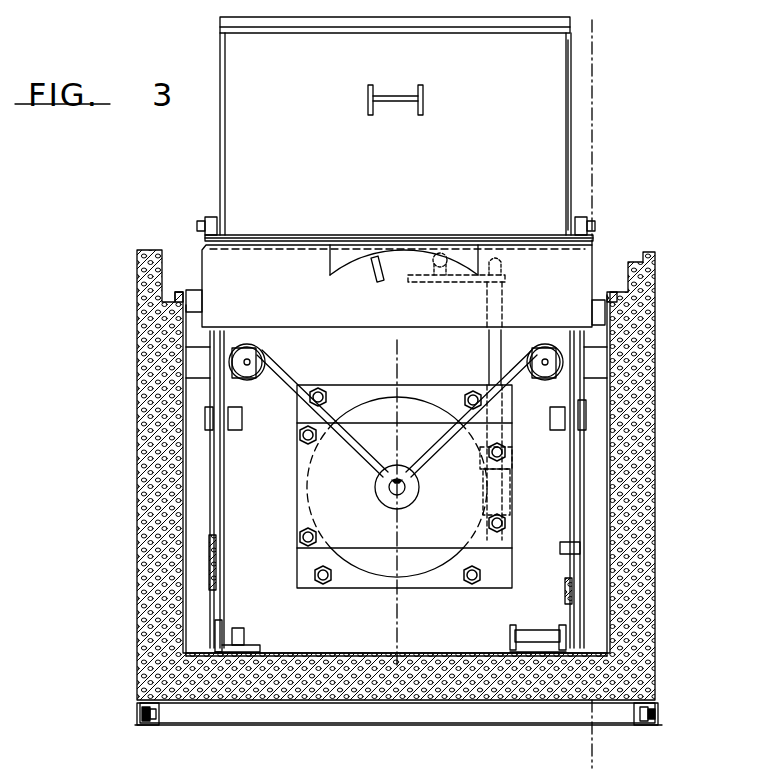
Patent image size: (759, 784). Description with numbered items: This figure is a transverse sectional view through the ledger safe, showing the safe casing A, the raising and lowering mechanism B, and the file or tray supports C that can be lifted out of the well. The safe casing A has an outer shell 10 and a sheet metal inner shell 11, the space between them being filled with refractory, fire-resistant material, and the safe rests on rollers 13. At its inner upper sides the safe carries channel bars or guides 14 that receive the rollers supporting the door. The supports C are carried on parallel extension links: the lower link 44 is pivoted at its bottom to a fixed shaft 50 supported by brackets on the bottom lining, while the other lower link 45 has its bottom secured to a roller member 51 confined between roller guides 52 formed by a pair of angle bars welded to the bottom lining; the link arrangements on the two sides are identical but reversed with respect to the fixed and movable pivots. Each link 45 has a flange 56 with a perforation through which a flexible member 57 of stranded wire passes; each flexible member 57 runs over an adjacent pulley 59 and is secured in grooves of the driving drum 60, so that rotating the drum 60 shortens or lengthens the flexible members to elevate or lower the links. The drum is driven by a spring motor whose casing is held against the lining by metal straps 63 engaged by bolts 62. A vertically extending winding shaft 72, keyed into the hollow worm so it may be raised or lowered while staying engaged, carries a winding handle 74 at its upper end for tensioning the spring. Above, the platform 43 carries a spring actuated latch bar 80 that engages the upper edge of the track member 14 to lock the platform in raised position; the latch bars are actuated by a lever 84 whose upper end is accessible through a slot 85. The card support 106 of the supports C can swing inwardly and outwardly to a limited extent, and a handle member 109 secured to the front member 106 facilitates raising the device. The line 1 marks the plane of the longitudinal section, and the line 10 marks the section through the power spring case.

The section line 1— 1 is at (583, 33).
The shell 10 is at (410, 362).
The inner shell 11 is at (412, 652).
The rollers 13 is at (152, 726).
The channel bars or guides 14 is at (183, 298).
The platform 43 is at (594, 262).
The lower link 44 is at (572, 572).
The lower link 45 is at (226, 585).
The fixed shaft 50 is at (538, 630).
The roller member 51 is at (238, 630).
The roller guides 52 is at (218, 640).
The flange 56 is at (242, 420).
The flexible member 57 is at (288, 372).
The pulley 59 is at (258, 350).
The driving drum 60 is at (410, 480).
The bolts 62 is at (470, 585).
The metal straps 63 is at (368, 585).
The winding shaft 72 is at (512, 300).
The winding handle 74 is at (450, 283).
The latch bar 80 is at (198, 292).
The lever 84 is at (380, 258).
The slot 85 is at (440, 258).
The card support 106 is at (573, 97).
The handle member 109 is at (400, 88).
The safe casing A is at (656, 478).
The raising and lowering mechanism B is at (226, 338).
The file or tray supports C is at (562, 180).